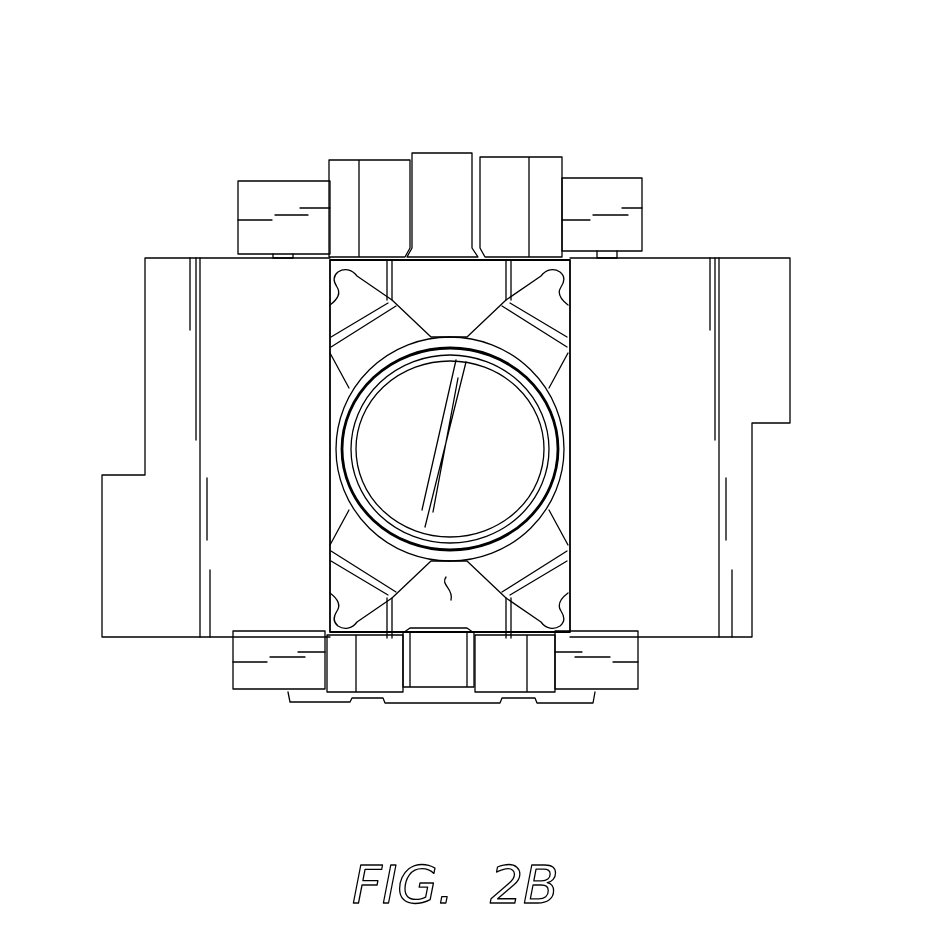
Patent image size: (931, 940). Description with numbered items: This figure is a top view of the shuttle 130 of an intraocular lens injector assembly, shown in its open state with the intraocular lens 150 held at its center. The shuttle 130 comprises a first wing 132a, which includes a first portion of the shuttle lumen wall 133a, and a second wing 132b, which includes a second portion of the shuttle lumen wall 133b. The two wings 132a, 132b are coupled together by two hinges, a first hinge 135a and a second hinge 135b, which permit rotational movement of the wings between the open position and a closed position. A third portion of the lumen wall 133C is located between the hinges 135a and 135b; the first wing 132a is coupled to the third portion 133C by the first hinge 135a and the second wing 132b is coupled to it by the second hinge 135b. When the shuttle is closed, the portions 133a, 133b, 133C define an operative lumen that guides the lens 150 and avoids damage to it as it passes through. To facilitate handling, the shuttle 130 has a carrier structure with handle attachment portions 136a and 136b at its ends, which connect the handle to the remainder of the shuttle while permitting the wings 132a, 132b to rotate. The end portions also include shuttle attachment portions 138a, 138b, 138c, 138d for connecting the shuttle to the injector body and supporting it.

The shuttle 130 is at (185, 103).
The first wing 132a is at (145, 343).
The second wing 132b is at (752, 486).
The first portion of the shuttle lumen wall 133a is at (373, 270).
The second portion of the shuttle lumen wall 133b is at (518, 268).
The third portion of the lumen wall 133C is at (452, 587).
The first hinge 135a is at (427, 633).
The second hinge 135b is at (475, 633).
The handle attachment portion 136a is at (455, 121).
The handle attachment portion 136b is at (297, 739).
The shuttle attachment portion 138a is at (234, 178).
The shuttle attachment portion 138b is at (236, 706).
The shuttle attachment portion 138c is at (656, 698).
The shuttle attachment portion 138d is at (642, 168).
The intraocular lens 150 is at (551, 395).